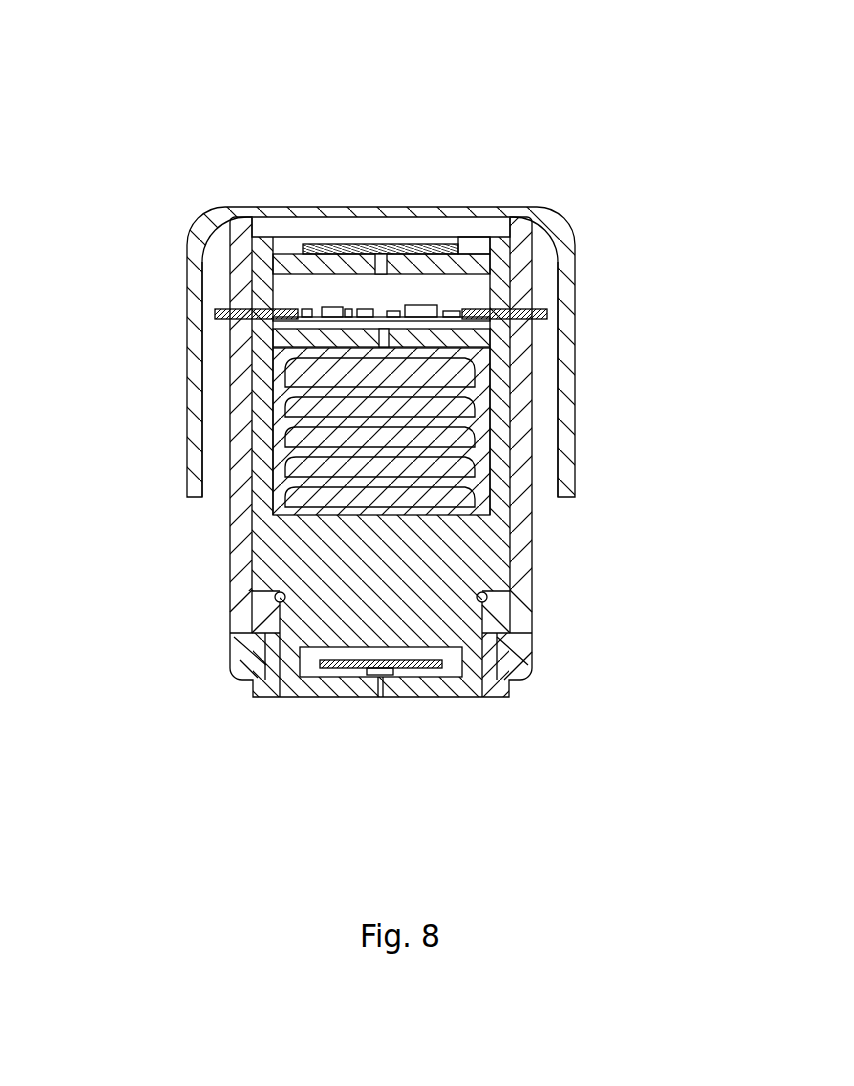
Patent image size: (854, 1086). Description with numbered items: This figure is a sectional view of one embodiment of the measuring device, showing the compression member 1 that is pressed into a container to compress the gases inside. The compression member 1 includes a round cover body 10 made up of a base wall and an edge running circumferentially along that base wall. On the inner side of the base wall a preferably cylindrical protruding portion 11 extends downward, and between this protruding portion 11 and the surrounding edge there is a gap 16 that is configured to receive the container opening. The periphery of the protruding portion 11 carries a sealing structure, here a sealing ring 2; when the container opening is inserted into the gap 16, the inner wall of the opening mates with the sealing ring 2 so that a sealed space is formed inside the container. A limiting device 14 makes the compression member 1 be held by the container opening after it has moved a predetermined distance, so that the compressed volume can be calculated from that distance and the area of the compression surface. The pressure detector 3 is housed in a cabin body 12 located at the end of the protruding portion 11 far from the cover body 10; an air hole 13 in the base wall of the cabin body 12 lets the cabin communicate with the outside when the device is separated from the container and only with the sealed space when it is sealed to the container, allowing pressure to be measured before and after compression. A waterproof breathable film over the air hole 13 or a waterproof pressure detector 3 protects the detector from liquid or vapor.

The compression member 1 is at (377, 166).
The sealing ring 2 is at (517, 655).
The pressure detector 3 is at (333, 667).
The cover body 10 is at (570, 335).
The protruding portion 11 is at (520, 553).
The cabin body 12 is at (255, 636).
The air hole 13 is at (380, 690).
The limiting device 14 is at (268, 310).
The gap 16 is at (548, 417).